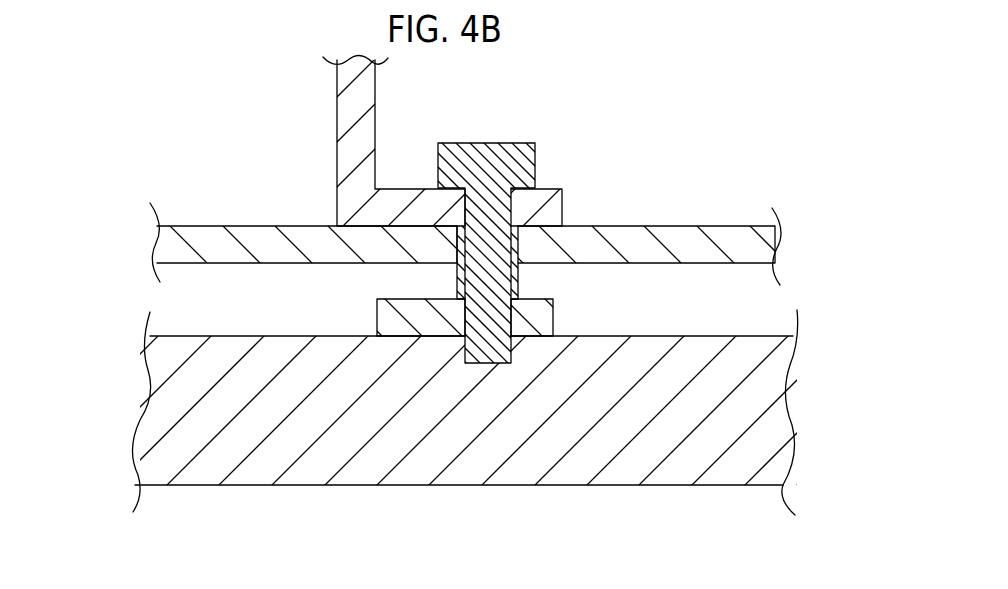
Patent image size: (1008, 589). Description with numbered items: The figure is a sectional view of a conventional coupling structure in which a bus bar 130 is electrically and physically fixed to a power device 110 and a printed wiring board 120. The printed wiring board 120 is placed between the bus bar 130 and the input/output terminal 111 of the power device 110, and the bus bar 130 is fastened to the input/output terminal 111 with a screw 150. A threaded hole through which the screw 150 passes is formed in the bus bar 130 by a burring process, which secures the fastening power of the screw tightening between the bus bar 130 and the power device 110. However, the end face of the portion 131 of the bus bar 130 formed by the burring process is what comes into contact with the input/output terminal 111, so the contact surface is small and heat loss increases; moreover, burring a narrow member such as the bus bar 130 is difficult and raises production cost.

The power device 110 is at (620, 472).
The input/output terminal 111 is at (545, 314).
The printed wiring board 120 is at (205, 226).
The bus bar 130 is at (345, 128).
The portion of the bus bar formed by the burring process 131 is at (517, 278).
The screw 150 is at (537, 164).